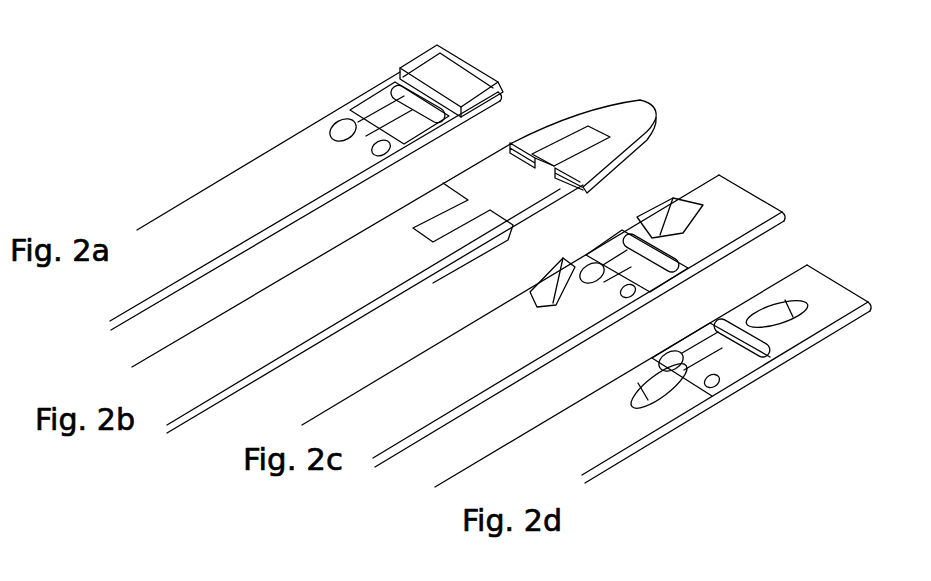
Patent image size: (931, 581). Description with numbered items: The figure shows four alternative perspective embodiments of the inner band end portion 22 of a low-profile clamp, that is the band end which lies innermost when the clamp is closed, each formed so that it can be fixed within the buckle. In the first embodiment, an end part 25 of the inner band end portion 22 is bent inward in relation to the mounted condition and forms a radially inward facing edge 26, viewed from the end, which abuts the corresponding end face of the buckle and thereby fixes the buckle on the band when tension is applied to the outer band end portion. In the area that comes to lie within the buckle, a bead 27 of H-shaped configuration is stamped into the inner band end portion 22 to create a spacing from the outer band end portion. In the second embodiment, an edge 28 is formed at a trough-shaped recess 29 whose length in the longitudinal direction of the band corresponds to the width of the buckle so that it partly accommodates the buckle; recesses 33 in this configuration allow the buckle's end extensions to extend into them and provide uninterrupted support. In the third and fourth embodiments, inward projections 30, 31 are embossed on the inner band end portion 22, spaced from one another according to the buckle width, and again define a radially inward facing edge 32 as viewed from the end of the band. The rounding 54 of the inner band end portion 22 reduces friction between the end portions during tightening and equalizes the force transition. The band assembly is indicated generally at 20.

In FIG. 2A, the strip assembly 20 is at (224, 181).
In FIG. 2A, the inner band end portion 22 is at (331, 182).
In FIG. 2B, the inner band end portion 22 is at (413, 265).
In FIG. 2C, the inner band end portion 22 is at (543, 321).
In FIG. 2D, the inner band end portion 22 is at (753, 378).
In FIG. 2A, the end part 25 is at (458, 68).
In FIG. 2A, the radially inward facing edge 26 is at (401, 76).
In FIG. 2A, the bead 27 is at (370, 130).
In FIG. 2C, the bead 27 is at (620, 272).
In FIG. 2D, the bead 27 is at (727, 365).
In FIG. 2B, the edge 28 is at (510, 157).
In FIG. 2B, the trough-shaped recess 29 is at (483, 192).
In FIG. 2C, the inward projections 30 is at (534, 291).
In FIG. 2D, the inward projections 31 is at (794, 326).
In FIG. 2C, the radially inward facing edge 32 is at (637, 227).
In FIG. 2D, the radially inward facing edge 32 is at (750, 322).
In FIG. 2B, the recesses 33 is at (580, 148).
In FIG. 2B, the rounding 54 is at (634, 111).